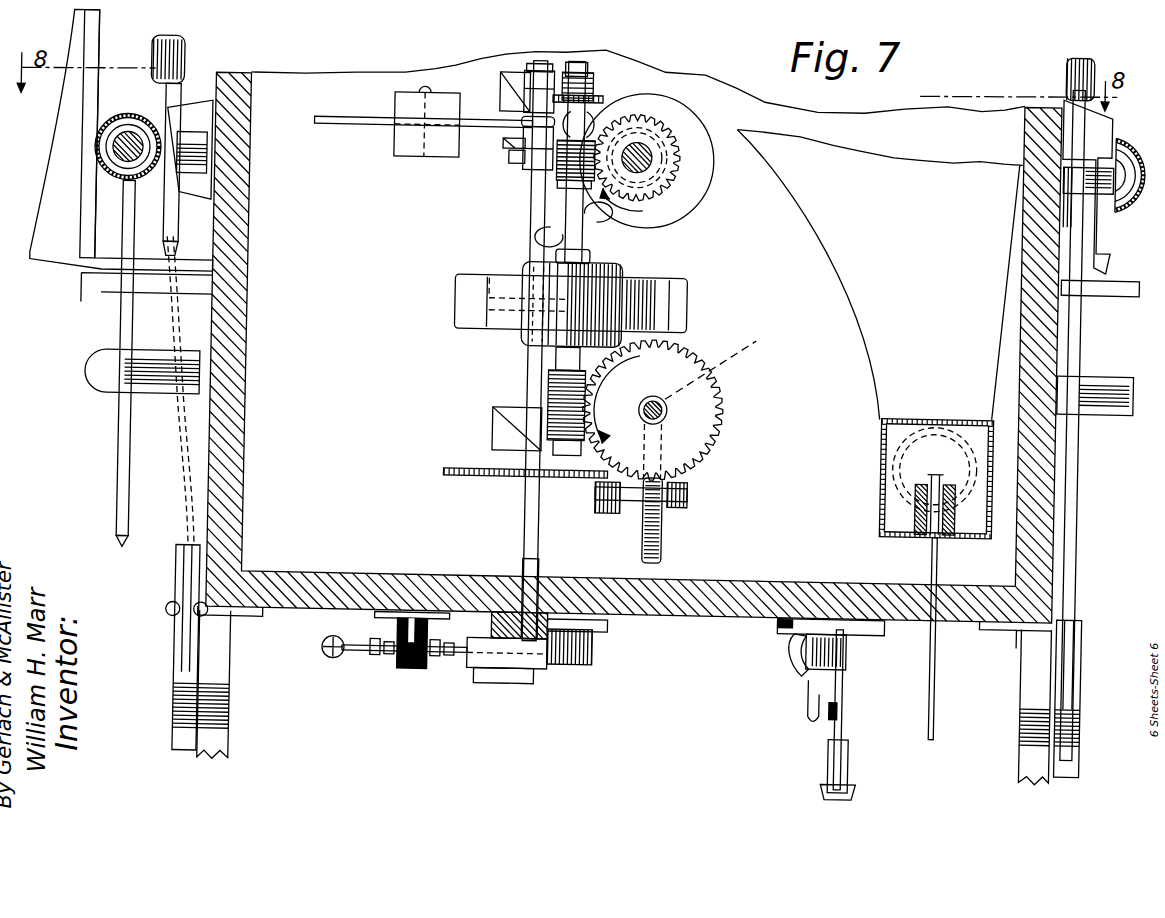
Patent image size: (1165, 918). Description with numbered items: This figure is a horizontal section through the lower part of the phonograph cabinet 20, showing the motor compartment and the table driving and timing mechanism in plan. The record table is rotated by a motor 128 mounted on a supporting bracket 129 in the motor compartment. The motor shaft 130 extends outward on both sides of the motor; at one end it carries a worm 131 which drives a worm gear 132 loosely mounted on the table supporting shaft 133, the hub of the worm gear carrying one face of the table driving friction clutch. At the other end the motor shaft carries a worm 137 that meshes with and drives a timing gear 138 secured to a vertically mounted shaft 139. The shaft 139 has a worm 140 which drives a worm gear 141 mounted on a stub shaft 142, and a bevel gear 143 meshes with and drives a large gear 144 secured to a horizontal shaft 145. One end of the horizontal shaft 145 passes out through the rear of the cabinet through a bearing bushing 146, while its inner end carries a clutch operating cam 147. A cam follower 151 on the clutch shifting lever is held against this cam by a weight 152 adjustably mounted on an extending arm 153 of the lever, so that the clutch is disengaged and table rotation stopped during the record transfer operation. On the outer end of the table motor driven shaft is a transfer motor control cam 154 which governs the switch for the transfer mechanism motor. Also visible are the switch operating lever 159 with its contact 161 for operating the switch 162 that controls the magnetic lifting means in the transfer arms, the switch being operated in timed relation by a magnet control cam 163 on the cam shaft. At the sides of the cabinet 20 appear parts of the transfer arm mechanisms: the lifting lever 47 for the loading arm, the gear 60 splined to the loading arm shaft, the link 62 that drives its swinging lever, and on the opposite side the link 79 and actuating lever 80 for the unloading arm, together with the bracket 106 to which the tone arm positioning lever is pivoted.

The cabinet 20 is at (232, 302).
The lever 47 is at (133, 494).
The gear 60 is at (128, 124).
The link 62 is at (190, 590).
The link 79 is at (1081, 470).
The actuating lever 80 is at (1088, 678).
The bracket 106 is at (1046, 688).
The motor 128 is at (618, 278).
The supporting bracket 129 is at (688, 290).
The motor shaft 130 is at (582, 244).
The worm 131 is at (557, 183).
The worm gear 132 is at (668, 184).
The table supporting shaft 133 is at (645, 130).
The worm 137 is at (548, 395).
The timing gear 138 is at (700, 384).
The shaft 139 is at (669, 410).
The worm 140 is at (734, 360).
The worm gear 141 is at (666, 548).
The stub shaft 142 is at (692, 495).
The bevel gear 143 is at (600, 510).
The large gear 144 is at (452, 478).
The horizontal shaft 145 is at (528, 530).
The bearing bushing 146 is at (543, 590).
The clutch operating cam 147 is at (499, 147).
The cam follower 151 is at (510, 166).
The weight 152 is at (392, 148).
The extending arm 153 is at (335, 126).
The transfer motor control cam 154 is at (500, 686).
The switch operating lever 159 is at (850, 716).
The contact 161 is at (815, 705).
The switch 162 is at (805, 640).
The magnet control cam 163 is at (856, 765).